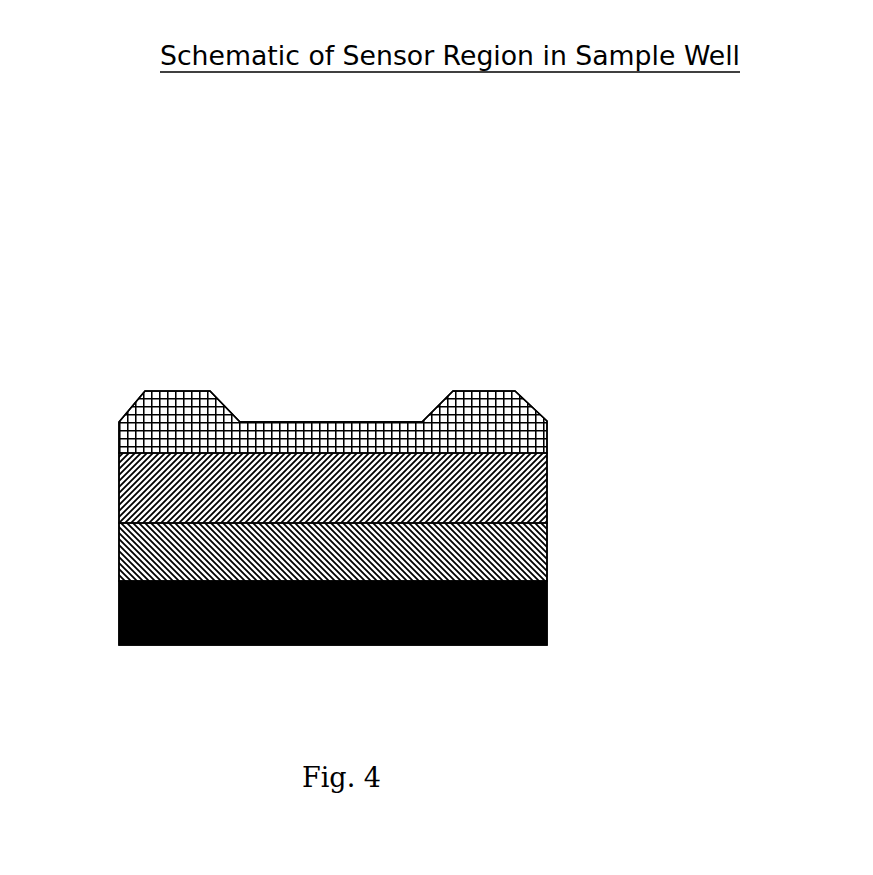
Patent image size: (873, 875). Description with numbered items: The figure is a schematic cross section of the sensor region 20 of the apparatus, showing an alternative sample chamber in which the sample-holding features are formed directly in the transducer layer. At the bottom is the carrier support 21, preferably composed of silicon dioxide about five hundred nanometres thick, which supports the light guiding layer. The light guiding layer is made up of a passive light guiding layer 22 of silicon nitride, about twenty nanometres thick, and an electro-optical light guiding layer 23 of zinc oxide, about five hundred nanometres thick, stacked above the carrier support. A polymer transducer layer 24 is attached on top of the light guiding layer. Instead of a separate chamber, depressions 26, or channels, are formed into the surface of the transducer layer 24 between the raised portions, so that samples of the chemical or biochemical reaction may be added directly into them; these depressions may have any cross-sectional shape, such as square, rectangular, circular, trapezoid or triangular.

The sensor region 20 is at (292, 409).
The carrier support 21 is at (547, 602).
The passive light guiding layer 22 is at (547, 542).
The electro-optical light guiding layer 23 is at (547, 482).
The transducer layer 24 is at (547, 421).
The depressions 26 is at (348, 422).